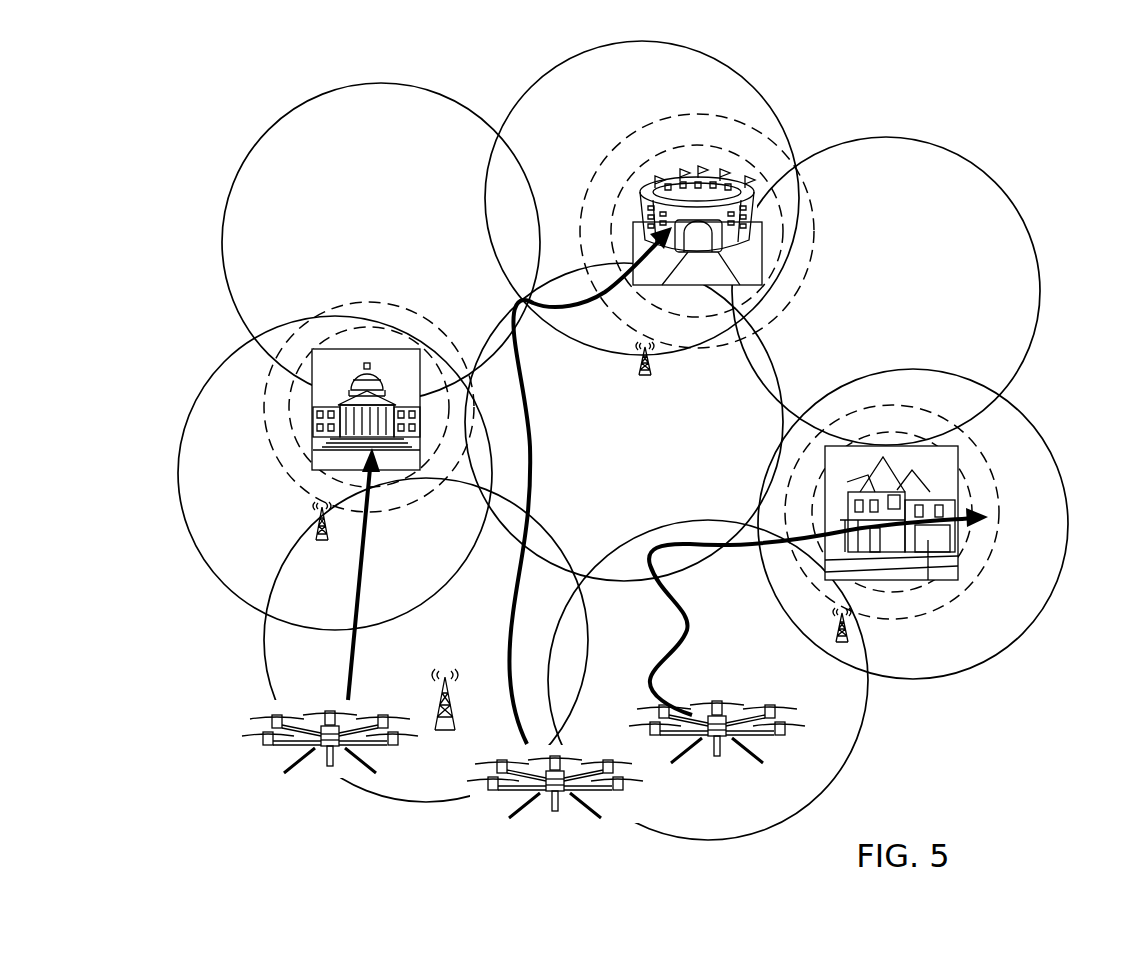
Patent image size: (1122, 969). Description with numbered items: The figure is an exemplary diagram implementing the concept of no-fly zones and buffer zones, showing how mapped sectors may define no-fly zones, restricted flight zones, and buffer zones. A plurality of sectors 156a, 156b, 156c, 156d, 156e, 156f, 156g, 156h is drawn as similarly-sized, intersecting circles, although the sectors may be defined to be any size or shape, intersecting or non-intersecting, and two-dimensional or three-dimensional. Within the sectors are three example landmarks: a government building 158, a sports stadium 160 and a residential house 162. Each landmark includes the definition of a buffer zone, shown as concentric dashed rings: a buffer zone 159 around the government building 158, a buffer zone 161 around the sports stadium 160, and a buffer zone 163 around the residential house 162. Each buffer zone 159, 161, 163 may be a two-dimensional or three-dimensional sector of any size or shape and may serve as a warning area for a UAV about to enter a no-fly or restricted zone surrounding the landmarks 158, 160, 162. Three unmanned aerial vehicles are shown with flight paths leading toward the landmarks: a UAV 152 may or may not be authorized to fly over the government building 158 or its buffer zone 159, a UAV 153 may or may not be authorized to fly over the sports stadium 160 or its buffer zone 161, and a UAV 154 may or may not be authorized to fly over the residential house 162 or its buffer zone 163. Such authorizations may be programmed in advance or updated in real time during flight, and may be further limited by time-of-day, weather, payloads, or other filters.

The UAV 152 is at (330, 750).
The UAV 153 is at (555, 793).
The UAV 154 is at (697, 740).
The sector 156a is at (316, 173).
The sector 156b is at (559, 98).
The sector 156c is at (836, 218).
The sector 156d is at (196, 463).
The sector 156e is at (562, 479).
The sector 156f is at (1003, 536).
The sector 156g is at (402, 647).
The sector 156h is at (698, 653).
The government building 158 is at (398, 363).
The buffer zone 159 is at (285, 372).
The sports stadium 160 is at (698, 163).
The buffer zone 161 is at (743, 138).
The residential house 162 is at (932, 460).
The buffer zone 163 is at (973, 442).